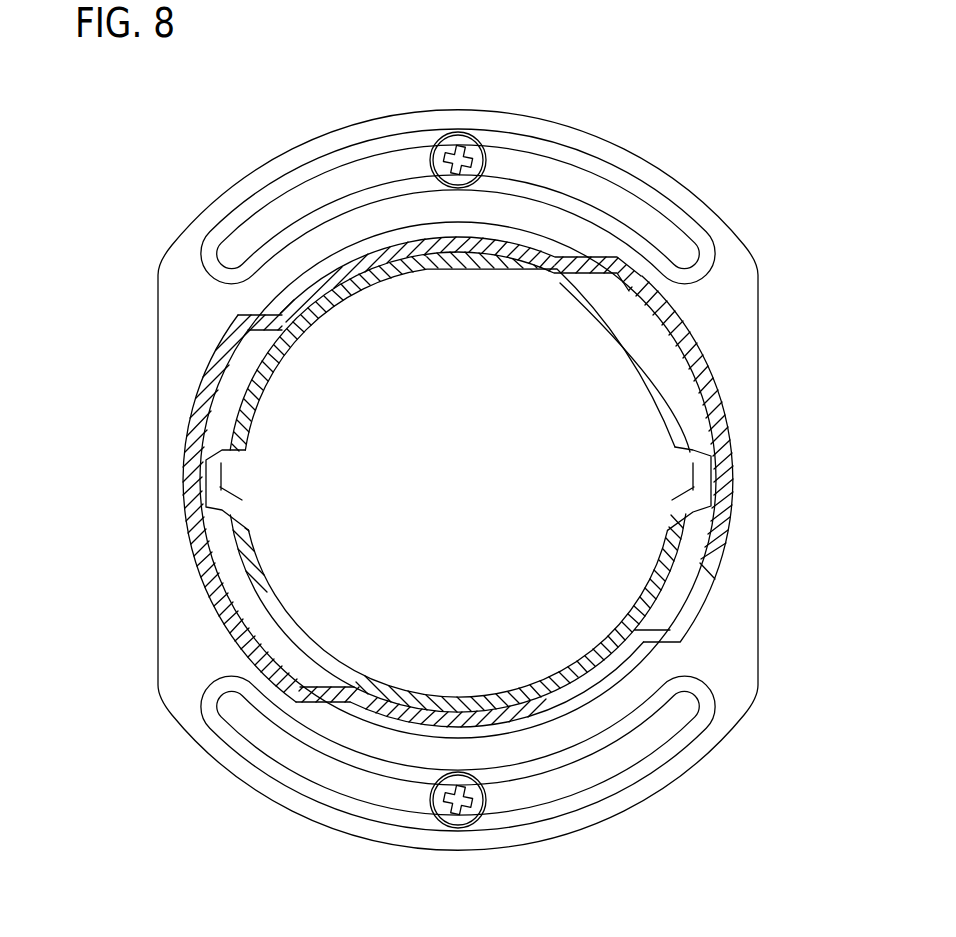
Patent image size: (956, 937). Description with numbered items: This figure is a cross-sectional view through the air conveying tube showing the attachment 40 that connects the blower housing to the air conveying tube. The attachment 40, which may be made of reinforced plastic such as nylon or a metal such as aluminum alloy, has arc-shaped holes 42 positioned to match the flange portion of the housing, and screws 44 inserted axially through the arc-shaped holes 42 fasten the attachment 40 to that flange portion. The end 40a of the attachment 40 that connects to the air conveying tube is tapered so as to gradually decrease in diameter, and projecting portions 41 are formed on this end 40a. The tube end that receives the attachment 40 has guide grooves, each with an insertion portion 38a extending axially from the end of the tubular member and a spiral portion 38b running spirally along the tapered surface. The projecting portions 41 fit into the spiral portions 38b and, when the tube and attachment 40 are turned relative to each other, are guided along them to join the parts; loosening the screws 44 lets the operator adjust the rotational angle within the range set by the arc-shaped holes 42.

The attachment 40 is at (745, 180).
The end of the attachment 40a is at (335, 296).
The arc-shaped holes 42 is at (632, 198).
The screws 44 is at (488, 165).
The insertion portion 38a is at (246, 352).
The spiral portion 38b is at (220, 413).
The projecting portions 41 is at (203, 473).